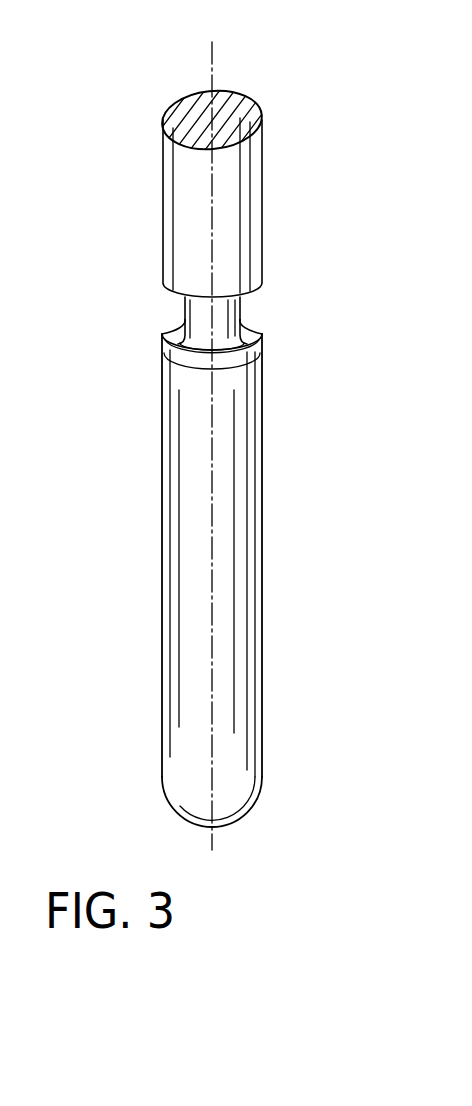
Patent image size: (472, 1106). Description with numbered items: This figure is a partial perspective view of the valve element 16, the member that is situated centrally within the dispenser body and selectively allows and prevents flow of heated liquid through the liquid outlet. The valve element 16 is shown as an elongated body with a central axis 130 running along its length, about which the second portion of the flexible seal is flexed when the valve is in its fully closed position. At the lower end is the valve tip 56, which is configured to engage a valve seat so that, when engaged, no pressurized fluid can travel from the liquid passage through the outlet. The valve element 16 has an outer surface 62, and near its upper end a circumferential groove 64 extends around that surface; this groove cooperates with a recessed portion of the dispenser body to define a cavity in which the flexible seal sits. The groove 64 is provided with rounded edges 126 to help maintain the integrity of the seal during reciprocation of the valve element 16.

The central axis 130 is at (216, 58).
The valve element 16 is at (116, 226).
The rounded edges 126 is at (170, 328).
The circumferential groove 64 is at (267, 280).
The outer surface 62 is at (263, 531).
The valve tip 56 is at (220, 828).